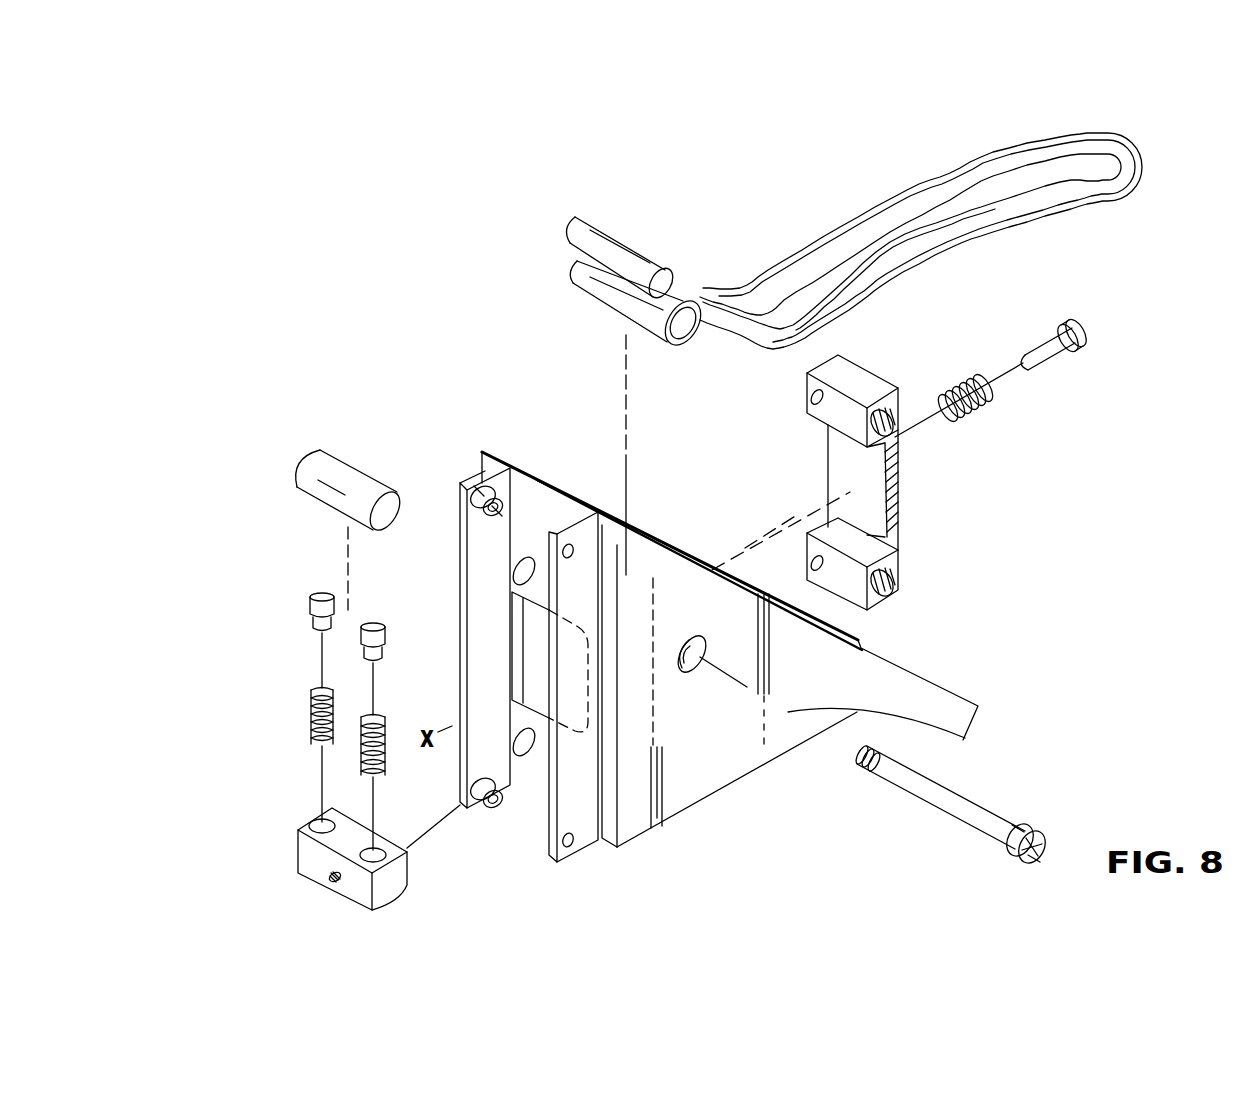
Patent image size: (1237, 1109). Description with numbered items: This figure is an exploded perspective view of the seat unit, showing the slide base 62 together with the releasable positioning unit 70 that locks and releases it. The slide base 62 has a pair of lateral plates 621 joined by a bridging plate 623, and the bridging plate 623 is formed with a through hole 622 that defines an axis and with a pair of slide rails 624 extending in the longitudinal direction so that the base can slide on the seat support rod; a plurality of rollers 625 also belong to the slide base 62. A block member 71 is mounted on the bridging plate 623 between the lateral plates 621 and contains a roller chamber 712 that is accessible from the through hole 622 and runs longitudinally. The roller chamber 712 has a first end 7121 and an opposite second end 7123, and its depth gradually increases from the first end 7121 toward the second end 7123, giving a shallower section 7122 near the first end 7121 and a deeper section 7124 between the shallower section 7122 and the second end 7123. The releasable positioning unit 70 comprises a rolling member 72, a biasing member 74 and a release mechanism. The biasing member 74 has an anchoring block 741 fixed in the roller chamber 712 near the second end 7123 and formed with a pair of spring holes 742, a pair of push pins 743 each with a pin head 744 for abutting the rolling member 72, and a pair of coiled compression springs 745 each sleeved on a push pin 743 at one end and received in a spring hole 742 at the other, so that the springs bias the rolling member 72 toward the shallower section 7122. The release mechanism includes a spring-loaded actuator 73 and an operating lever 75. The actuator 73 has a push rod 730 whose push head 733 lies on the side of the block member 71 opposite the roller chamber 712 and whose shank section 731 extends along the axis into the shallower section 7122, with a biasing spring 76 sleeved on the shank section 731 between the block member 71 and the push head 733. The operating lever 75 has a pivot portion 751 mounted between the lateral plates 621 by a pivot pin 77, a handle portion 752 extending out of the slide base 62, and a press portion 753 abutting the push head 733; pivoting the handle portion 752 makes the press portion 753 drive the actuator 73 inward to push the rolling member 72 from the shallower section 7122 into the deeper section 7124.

The releasable positioning unit 70 is at (762, 262).
The operating lever 75 is at (843, 220).
The pivot portion 751 is at (575, 269).
The handle portion 752 is at (988, 233).
The press portion 753 is at (572, 226).
The block member 71 is at (860, 353).
The roller chamber 712 is at (828, 455).
The first end 7121 is at (807, 416).
The shallower section 7122 is at (872, 468).
The second end 7123 is at (878, 548).
The deeper section 7124 is at (900, 533).
The rolling member 72 is at (307, 460).
The spring-loaded actuator 73 is at (1000, 360).
The push rod 730 is at (1040, 345).
The shank section 731 is at (1023, 368).
The push head 733 is at (1083, 330).
The biasing spring 76 is at (993, 417).
The slide base 62 is at (672, 818).
The lateral plates 621 is at (652, 532).
The through hole 622 is at (530, 640).
The bridging plate 623 is at (533, 483).
The slide rails 624 is at (462, 585).
The rollers 625 is at (476, 808).
The biasing member 74 is at (307, 723).
The anchoring block 741 is at (298, 853).
The spring holes 742 is at (370, 852).
The push pins 743 is at (308, 623).
The pin head 744 is at (310, 600).
The coiled compression springs 745 is at (313, 747).
The pivot pin 77 is at (895, 775).